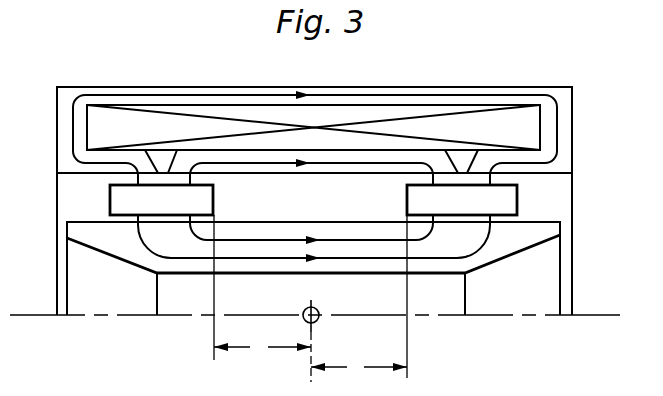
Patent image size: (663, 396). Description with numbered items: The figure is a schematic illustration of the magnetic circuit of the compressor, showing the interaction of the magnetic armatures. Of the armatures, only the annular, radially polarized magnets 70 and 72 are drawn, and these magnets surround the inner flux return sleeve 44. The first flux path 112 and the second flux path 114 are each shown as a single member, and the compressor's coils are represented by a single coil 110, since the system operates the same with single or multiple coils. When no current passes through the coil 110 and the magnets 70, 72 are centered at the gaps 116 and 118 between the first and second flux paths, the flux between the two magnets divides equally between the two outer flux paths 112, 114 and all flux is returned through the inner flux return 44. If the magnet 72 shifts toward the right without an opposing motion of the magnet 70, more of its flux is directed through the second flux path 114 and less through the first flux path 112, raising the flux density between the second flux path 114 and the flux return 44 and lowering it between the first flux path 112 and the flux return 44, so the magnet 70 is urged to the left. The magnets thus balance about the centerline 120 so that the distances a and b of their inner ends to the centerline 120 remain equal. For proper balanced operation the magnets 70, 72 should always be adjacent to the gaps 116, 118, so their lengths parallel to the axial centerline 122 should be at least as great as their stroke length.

The flux return sleeve 44 is at (537, 250).
The magnet 70 is at (110, 197).
The magnet 72 is at (517, 196).
The coil 110 is at (372, 118).
The first flux path 112 is at (253, 150).
The second flux path 114 is at (497, 87).
The gap 116 is at (162, 167).
The gap 118 is at (463, 165).
The centerline 120 is at (300, 362).
The axial centerline 122 is at (515, 315).